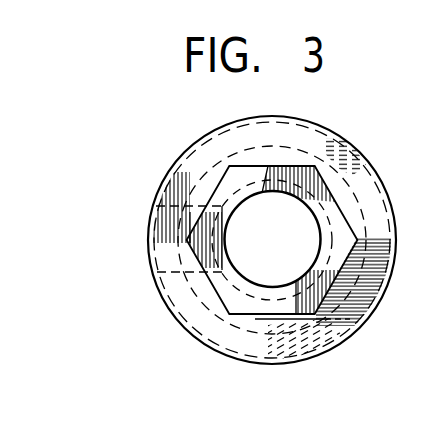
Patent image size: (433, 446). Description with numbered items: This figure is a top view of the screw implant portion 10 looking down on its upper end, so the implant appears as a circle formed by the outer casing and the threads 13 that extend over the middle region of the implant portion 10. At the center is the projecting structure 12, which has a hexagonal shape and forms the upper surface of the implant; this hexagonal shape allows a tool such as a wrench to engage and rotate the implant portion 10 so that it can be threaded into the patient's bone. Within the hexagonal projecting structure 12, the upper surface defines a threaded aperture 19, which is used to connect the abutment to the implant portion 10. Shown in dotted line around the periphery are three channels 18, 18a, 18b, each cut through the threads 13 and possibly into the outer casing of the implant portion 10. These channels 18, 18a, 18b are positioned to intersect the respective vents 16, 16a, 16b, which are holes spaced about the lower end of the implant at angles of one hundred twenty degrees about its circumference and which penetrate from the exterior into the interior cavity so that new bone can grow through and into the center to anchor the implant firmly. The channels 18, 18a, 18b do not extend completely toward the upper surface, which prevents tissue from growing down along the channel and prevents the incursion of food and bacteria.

The screw implant portion 10 is at (134, 300).
The projecting structure 12 is at (237, 298).
The threads 13 is at (272, 259).
The vent 16 is at (366, 320).
The vent 16a is at (158, 247).
The vent 16b is at (299, 124).
The channel 18 is at (329, 349).
The channel 18a is at (163, 193).
The channel 18b is at (348, 150).
The threaded aperture 19 is at (273, 239).